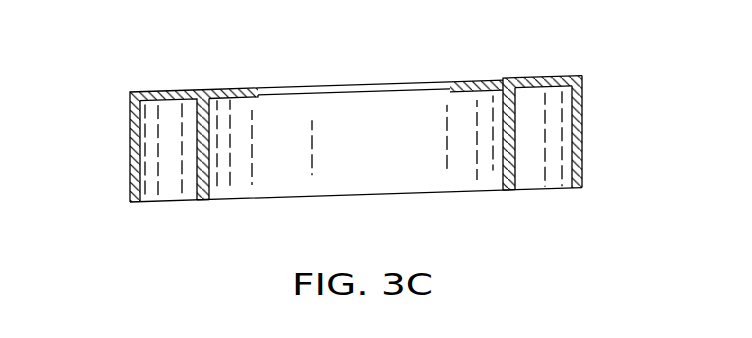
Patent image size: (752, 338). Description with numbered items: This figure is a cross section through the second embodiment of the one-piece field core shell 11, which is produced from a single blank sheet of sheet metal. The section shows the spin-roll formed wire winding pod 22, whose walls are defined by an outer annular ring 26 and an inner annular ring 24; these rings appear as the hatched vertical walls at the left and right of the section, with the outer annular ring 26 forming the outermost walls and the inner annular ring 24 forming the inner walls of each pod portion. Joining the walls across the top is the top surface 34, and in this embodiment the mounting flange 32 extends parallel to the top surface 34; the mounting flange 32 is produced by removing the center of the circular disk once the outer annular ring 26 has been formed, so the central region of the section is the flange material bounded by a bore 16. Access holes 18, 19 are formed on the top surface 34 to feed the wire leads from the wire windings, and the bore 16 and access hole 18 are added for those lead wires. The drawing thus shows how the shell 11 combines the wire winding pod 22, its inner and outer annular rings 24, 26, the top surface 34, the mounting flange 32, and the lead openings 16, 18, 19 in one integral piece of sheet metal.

The one-piece field core shell 11 is at (507, 92).
The bore 16 is at (357, 108).
The access hole 18 is at (167, 92).
The access hole 19 is at (538, 79).
The spin-roll formed wire winding pod 22 is at (174, 190).
The inner annular ring 24 is at (208, 203).
The outer annular ring 26 is at (131, 184).
The mounting flange 32 is at (250, 90).
The top surface 34 is at (209, 92).